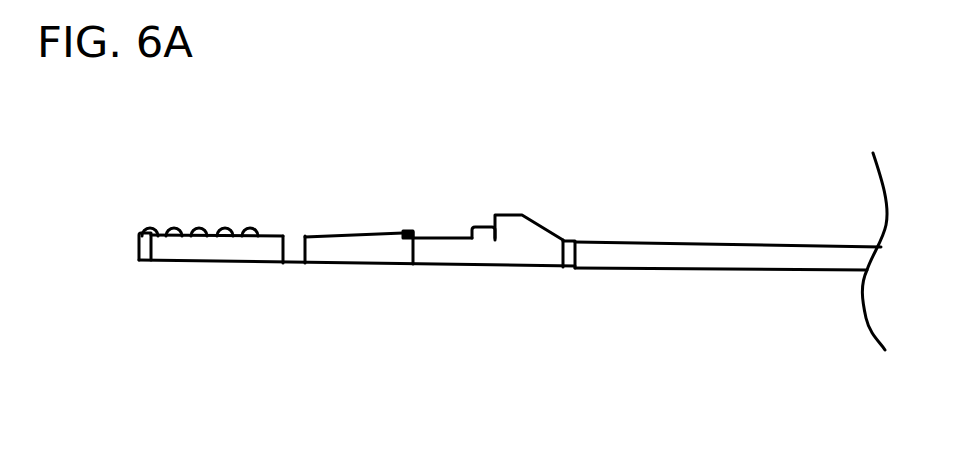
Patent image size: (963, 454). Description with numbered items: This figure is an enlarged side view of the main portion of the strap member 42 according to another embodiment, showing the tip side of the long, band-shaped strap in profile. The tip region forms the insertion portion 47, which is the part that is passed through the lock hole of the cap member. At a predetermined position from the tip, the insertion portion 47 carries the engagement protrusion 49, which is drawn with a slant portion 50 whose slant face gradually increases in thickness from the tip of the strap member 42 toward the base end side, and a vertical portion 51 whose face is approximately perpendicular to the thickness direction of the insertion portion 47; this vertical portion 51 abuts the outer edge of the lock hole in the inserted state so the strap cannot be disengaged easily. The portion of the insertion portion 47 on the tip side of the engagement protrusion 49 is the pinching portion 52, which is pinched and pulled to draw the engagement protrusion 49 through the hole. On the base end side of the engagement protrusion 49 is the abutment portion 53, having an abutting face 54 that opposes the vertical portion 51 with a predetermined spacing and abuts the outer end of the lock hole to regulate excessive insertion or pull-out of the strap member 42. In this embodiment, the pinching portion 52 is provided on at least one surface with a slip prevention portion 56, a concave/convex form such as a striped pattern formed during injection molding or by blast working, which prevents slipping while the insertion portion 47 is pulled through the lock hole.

The strap member 42 is at (739, 126).
The insertion portion 47 is at (360, 250).
The engagement protrusion 49 is at (393, 231).
The slant portion 50 is at (363, 233).
The vertical portion 51 is at (413, 264).
The pinching portion 52 is at (208, 250).
The abutment portion 53 is at (517, 230).
The abutting face 54 is at (473, 238).
The slip prevention portion 56 is at (205, 227).